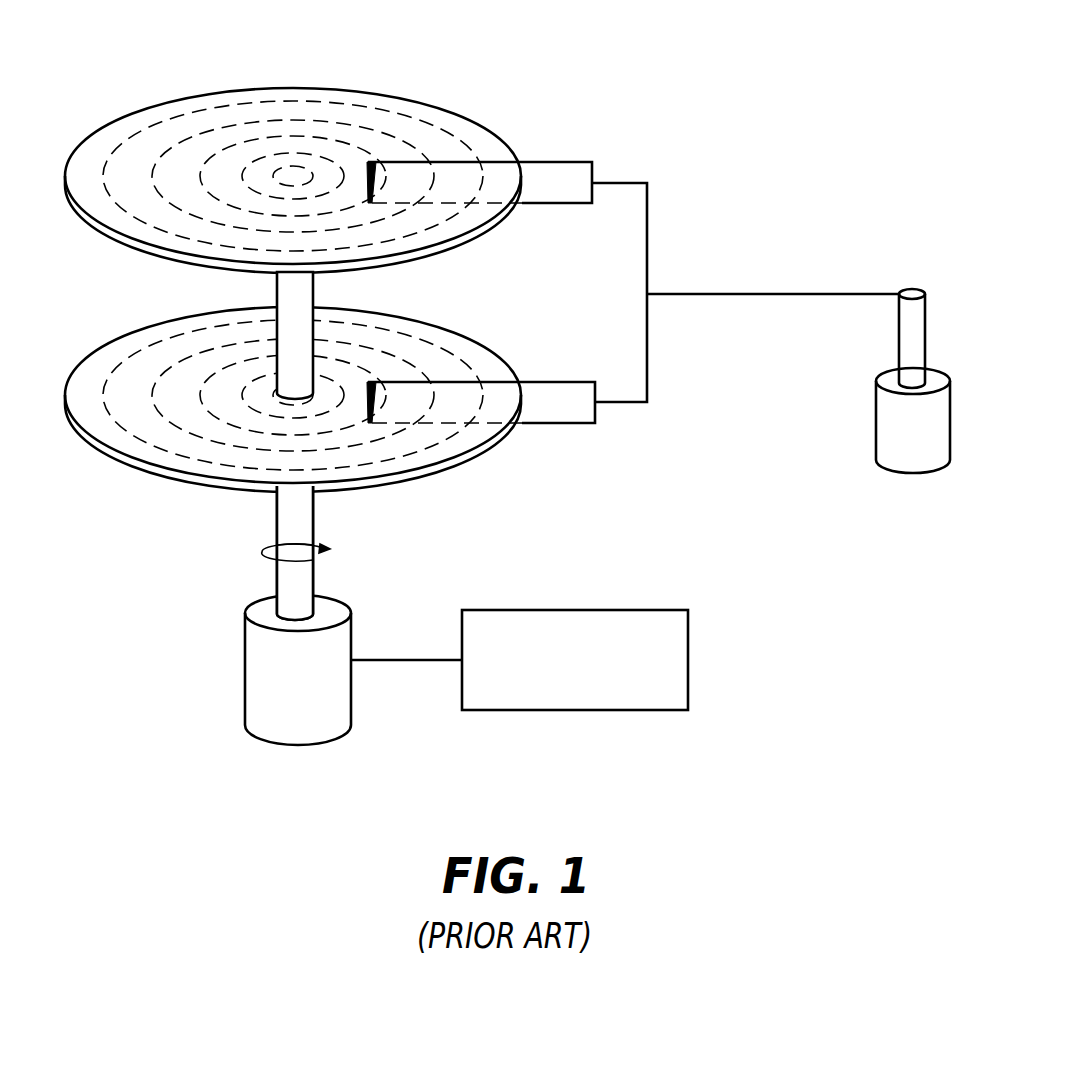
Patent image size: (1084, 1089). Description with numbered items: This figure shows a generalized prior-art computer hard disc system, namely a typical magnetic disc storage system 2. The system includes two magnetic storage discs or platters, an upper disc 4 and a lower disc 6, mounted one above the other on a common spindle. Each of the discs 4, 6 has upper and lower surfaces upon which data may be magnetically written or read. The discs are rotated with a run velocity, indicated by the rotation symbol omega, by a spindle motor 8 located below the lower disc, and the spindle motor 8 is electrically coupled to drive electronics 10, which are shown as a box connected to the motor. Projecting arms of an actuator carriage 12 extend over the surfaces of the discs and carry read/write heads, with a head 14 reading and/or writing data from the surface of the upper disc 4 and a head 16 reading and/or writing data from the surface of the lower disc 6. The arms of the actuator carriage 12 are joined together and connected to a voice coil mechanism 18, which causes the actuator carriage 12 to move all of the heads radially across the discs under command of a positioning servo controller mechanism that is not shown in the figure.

The magnetic disc storage system 2 is at (684, 84).
The magnetic storage disc 4 is at (322, 88).
The magnetic storage disc 6 is at (448, 328).
The spindle motor 8 is at (248, 677).
The drive electronics 10 is at (568, 610).
The actuator carriage 12 is at (617, 403).
The read/write head 14 is at (392, 150).
The read/write head 16 is at (412, 378).
The voice coil mechanism 18 is at (876, 425).